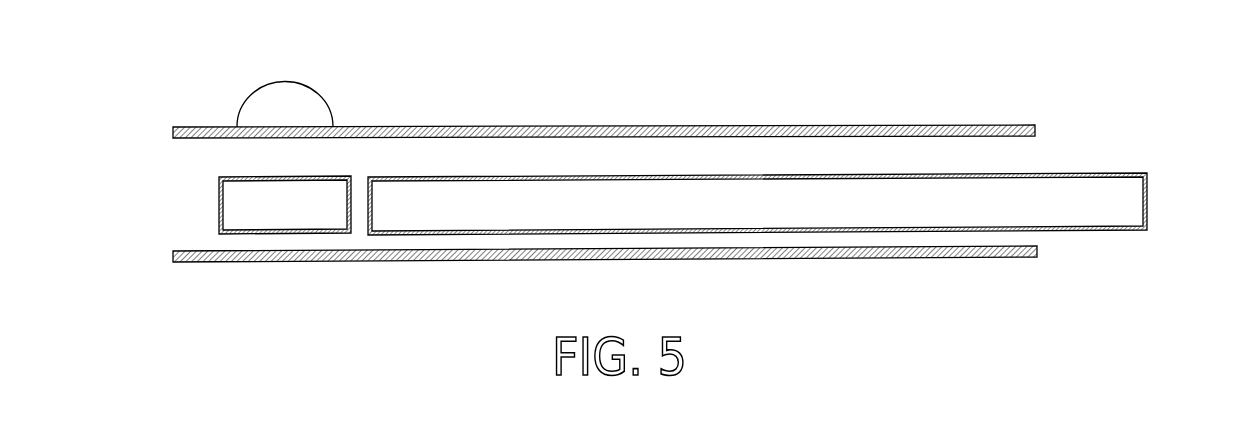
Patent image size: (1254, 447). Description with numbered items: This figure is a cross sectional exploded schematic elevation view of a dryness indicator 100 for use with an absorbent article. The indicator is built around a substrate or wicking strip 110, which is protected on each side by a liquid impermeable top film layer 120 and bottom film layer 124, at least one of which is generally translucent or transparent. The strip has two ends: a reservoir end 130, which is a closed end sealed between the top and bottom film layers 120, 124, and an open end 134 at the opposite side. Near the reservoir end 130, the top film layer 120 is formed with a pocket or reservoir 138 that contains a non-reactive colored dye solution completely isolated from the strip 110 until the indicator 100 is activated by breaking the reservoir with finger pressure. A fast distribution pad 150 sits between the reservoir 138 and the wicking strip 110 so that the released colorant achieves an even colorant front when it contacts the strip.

The dryness indicator 100 is at (1138, 100).
The wicking strip 110 is at (1148, 207).
The top film layer 120 is at (855, 124).
The bottom film layer 124 is at (972, 258).
The reservoir end 130 is at (182, 312).
The open end 134 is at (1138, 288).
The reservoir 138 is at (313, 93).
The fast distribution pad 150 is at (218, 212).